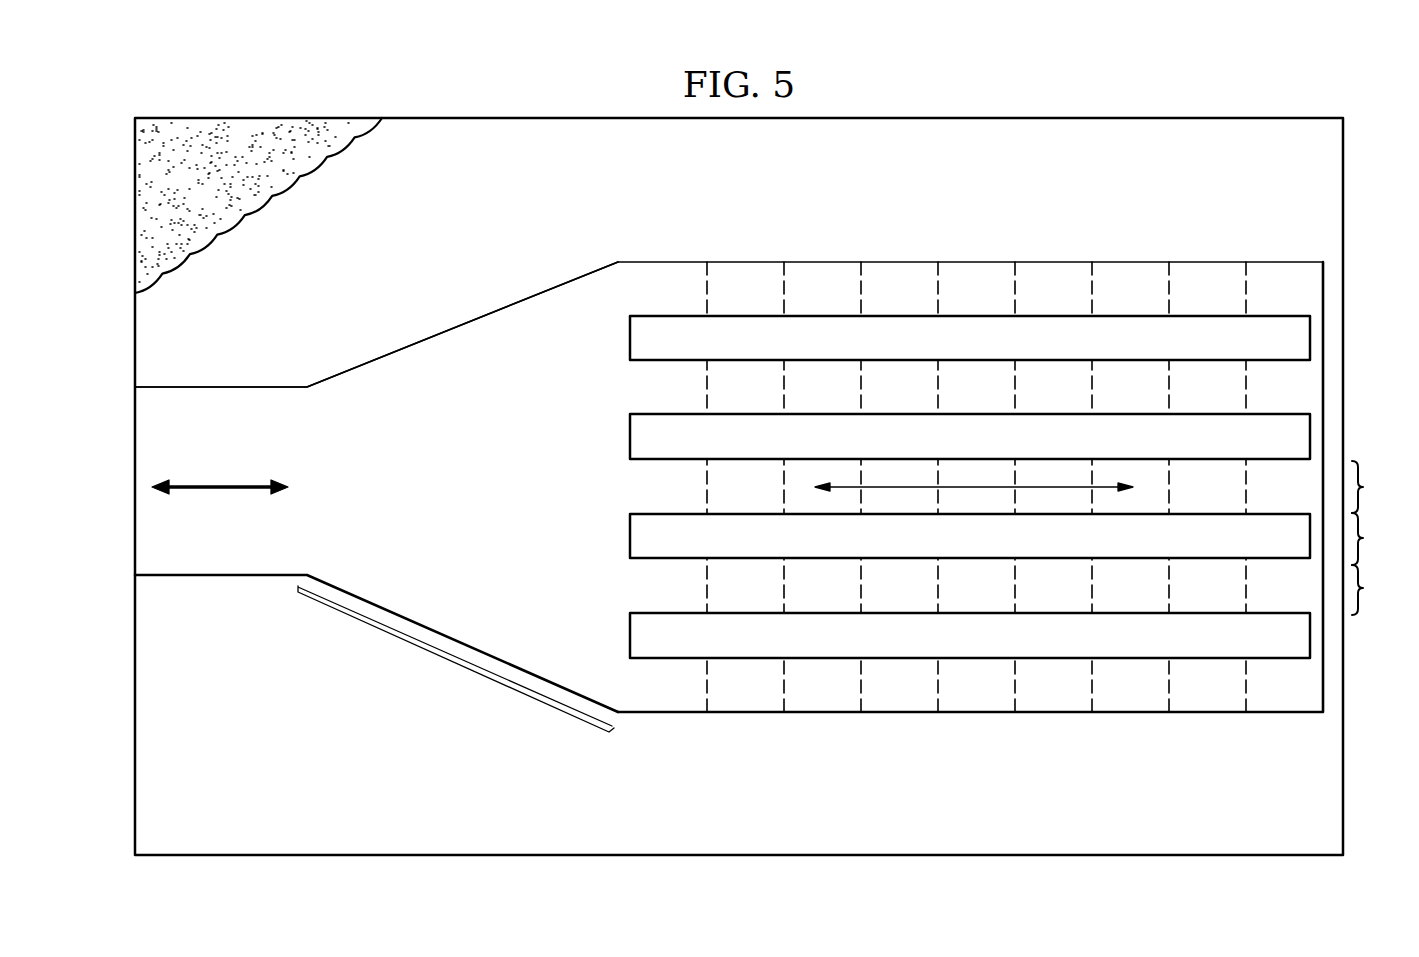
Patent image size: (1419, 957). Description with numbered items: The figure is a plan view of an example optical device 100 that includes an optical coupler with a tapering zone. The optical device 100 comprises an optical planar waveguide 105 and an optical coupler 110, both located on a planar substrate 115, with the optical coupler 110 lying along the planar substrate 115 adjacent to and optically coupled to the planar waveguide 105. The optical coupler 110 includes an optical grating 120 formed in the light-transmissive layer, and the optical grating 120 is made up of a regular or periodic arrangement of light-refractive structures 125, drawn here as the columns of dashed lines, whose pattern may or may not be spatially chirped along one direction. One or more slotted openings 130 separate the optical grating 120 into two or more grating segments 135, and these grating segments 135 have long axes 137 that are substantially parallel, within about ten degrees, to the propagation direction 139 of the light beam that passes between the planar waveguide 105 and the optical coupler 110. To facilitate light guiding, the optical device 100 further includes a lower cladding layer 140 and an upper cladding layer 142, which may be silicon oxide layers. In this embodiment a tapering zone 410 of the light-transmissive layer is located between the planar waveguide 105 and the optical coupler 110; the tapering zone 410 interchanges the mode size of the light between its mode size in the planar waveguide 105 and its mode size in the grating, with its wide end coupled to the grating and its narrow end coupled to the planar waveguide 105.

The optical device 100 is at (1212, 96).
The optical planar waveguide 105 is at (224, 370).
The optical coupler 110 is at (1079, 216).
The planar substrate 115 is at (1345, 780).
The optical grating 120 is at (1130, 261).
The light-refractive structures 125 is at (826, 270).
The slotted openings 130 is at (1021, 487).
The grating segments 135 is at (1382, 538).
The long axes 137 is at (960, 485).
The propagation direction 139 is at (220, 482).
The lower cladding layer 140 is at (440, 124).
The upper cladding layer 142 is at (212, 122).
The tapering zone 410 is at (453, 660).